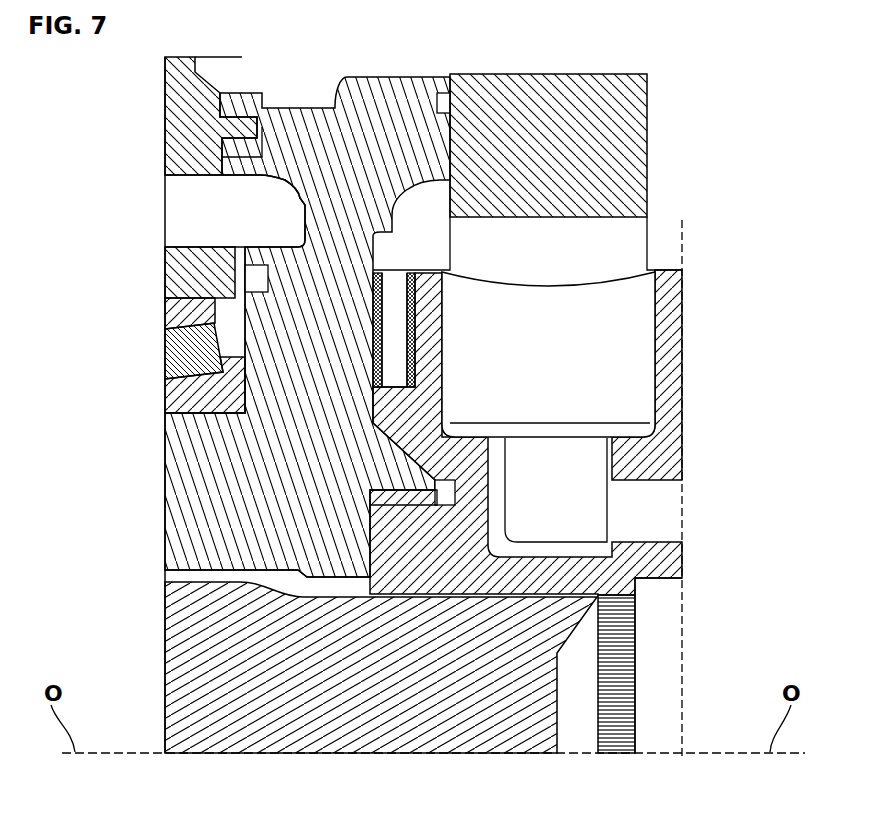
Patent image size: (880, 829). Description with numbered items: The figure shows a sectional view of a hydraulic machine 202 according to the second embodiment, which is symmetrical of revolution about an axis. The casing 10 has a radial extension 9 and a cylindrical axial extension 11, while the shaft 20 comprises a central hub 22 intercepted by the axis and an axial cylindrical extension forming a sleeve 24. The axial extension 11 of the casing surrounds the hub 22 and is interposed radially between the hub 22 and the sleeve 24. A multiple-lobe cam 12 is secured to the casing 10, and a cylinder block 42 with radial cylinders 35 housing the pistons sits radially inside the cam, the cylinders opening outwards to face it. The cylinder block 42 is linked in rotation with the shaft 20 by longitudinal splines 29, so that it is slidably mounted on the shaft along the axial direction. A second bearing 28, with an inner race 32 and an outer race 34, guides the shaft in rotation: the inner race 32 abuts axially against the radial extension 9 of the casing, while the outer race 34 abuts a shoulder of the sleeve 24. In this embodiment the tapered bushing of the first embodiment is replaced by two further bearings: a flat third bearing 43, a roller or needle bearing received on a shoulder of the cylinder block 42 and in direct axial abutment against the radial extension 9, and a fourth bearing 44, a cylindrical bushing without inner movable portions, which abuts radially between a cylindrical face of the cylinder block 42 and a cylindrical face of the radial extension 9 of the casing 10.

The casing 10 is at (364, 128).
The sleeve 24 is at (210, 139).
The multiple-lobe cam 12 is at (560, 156).
The third bearing 43 is at (420, 333).
The radial extension 9 is at (313, 308).
The radial cylinders 35 is at (560, 366).
The cylinder block 42 is at (668, 313).
The outer race 34 is at (168, 327).
The second bearing 28 is at (208, 362).
The machine 202 is at (125, 438).
The inner race 32 is at (168, 396).
The cylindrical axial extension 11 is at (294, 487).
The longitudinal splines 29 is at (512, 586).
The fourth bearing 44 is at (404, 497).
The hub 22 is at (233, 681).
The shaft 20 is at (372, 692).